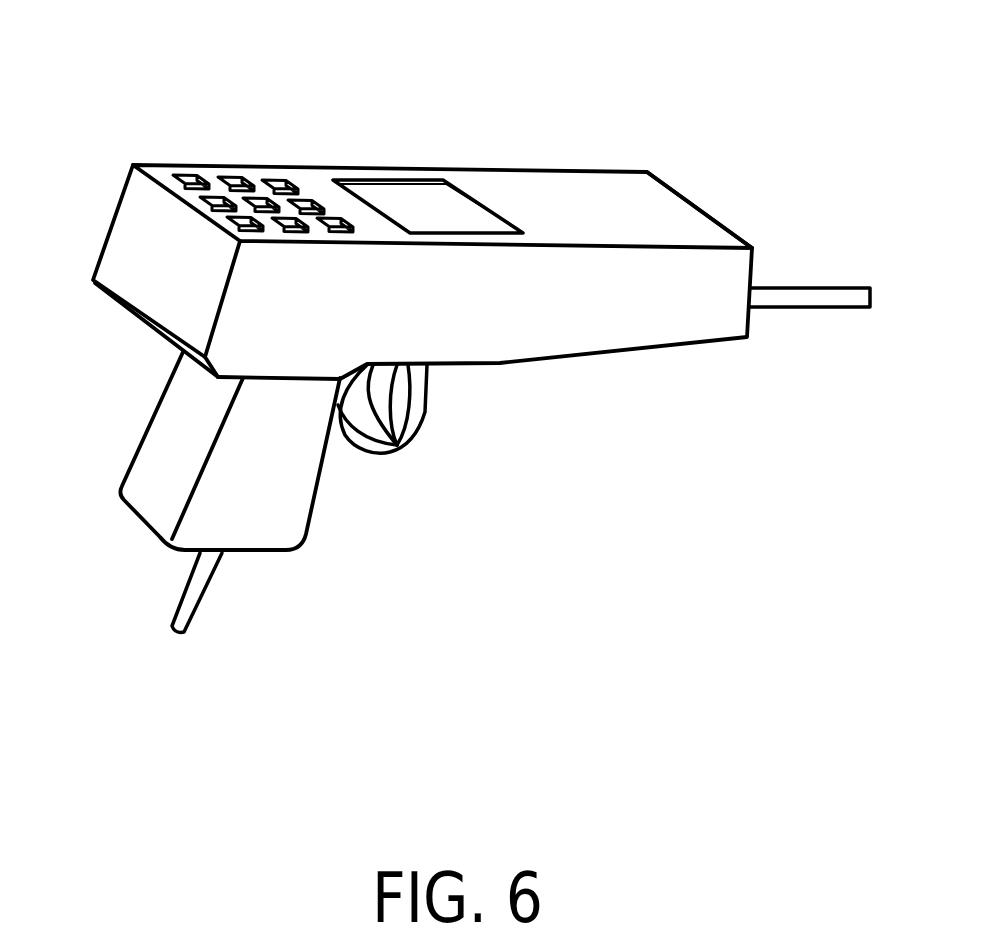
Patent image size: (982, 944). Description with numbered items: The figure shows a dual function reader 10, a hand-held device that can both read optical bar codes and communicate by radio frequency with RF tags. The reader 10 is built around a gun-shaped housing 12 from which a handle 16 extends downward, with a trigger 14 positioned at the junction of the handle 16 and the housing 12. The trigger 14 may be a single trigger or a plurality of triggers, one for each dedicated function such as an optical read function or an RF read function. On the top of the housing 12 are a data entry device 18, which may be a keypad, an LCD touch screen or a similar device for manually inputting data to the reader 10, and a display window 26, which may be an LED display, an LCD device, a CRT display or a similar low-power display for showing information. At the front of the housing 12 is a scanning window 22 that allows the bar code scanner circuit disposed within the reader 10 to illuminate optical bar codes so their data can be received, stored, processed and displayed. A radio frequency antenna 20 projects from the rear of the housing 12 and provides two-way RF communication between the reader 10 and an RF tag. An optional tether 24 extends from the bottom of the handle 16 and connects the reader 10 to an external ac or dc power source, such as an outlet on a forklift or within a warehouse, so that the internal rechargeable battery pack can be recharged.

The dual function reader 10 is at (416, 130).
The gun-shaped housing 12 is at (547, 170).
The trigger 14 is at (408, 447).
The handle 16 is at (150, 423).
The data entry device 18 is at (221, 170).
The radio frequency antenna 20 is at (847, 310).
The scanning window 22 is at (697, 207).
The tether 24 is at (190, 622).
The display window 26 is at (353, 170).